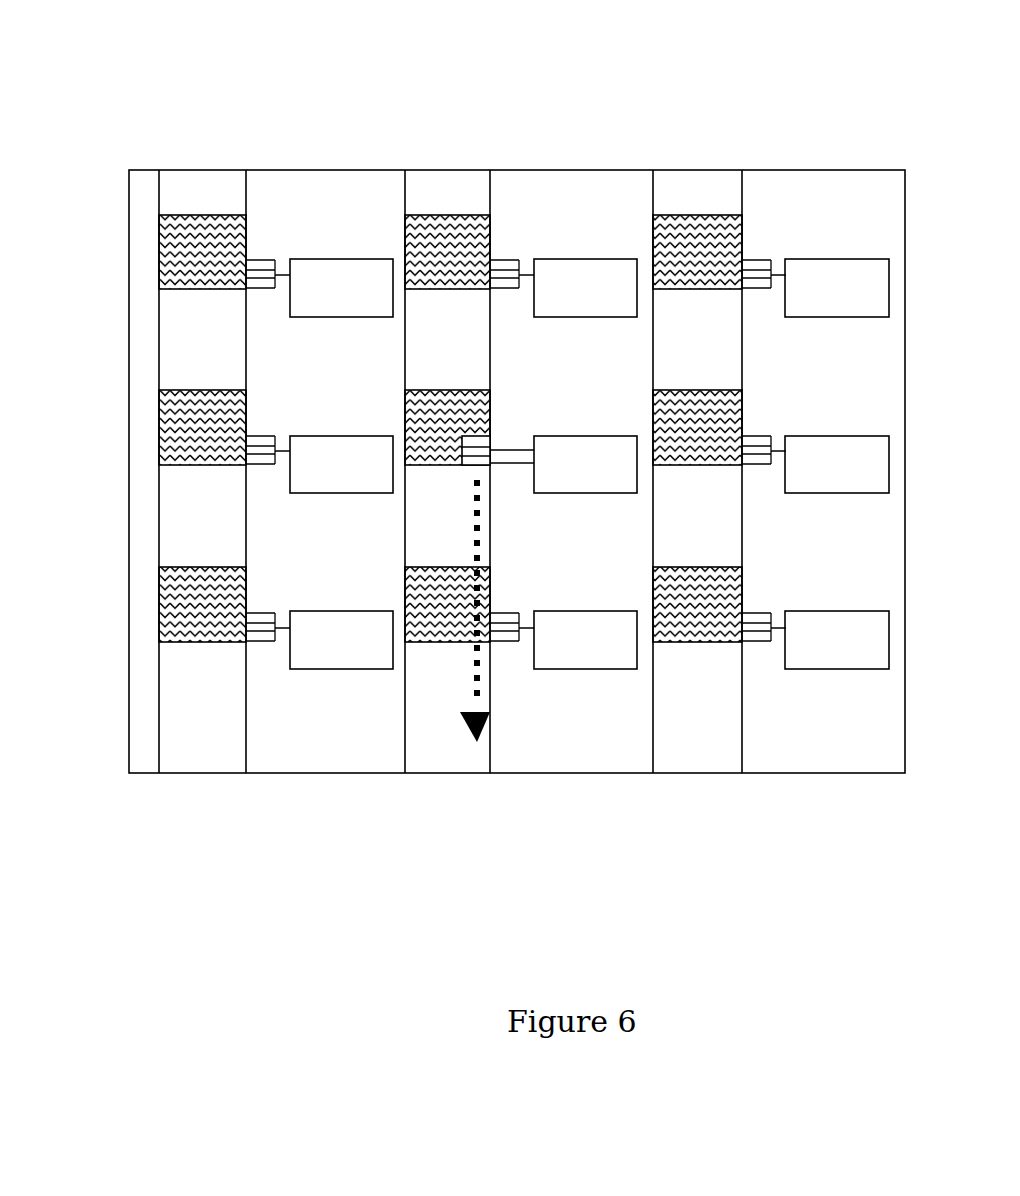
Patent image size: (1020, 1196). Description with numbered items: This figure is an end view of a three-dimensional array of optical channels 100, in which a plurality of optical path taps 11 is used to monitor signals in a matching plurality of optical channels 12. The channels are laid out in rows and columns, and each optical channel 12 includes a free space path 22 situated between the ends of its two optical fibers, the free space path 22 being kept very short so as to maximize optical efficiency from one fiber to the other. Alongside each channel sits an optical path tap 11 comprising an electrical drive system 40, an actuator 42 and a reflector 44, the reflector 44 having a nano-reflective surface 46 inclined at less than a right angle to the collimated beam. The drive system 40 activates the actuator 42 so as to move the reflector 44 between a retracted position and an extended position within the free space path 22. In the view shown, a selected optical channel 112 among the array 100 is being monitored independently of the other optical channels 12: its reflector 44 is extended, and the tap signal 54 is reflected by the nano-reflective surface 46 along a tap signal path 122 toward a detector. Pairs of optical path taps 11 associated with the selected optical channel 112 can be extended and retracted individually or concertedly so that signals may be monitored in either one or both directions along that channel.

The array of optical channels 100 is at (517, 392).
The optical path tap 11 is at (521, 215).
The optical channel 12 is at (695, 617).
The free space path 22 is at (200, 242).
The electrical drive system 40 is at (565, 465).
The actuator 42 is at (507, 450).
The reflector 44 is at (460, 440).
The nano-reflective surface 46 is at (477, 447).
The tap signal 54 is at (470, 672).
The selected optical channel 112 is at (428, 457).
The tap signal path 122 is at (420, 668).